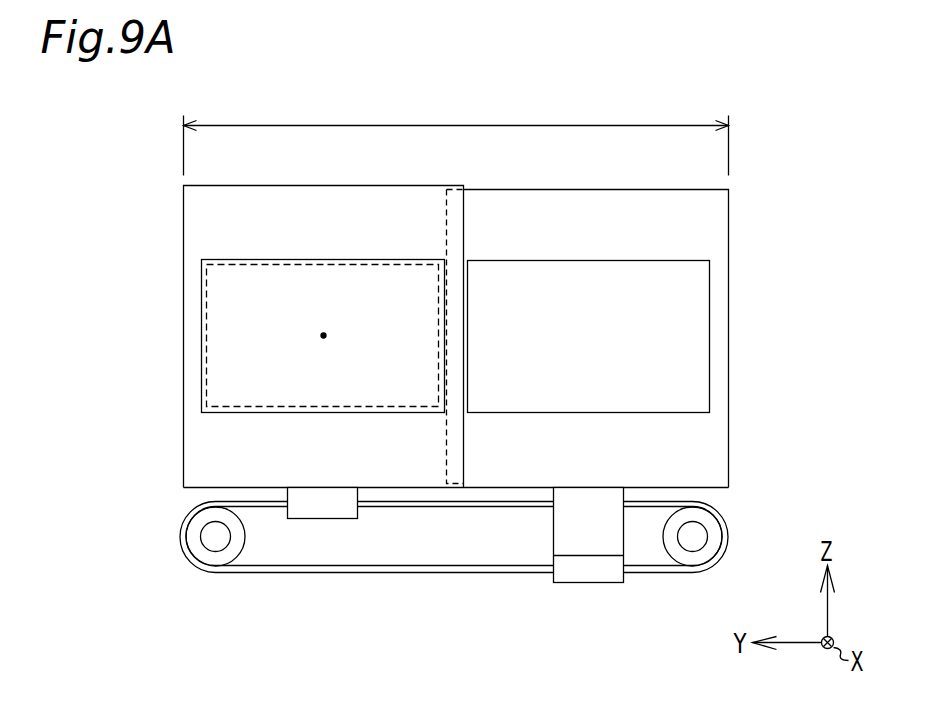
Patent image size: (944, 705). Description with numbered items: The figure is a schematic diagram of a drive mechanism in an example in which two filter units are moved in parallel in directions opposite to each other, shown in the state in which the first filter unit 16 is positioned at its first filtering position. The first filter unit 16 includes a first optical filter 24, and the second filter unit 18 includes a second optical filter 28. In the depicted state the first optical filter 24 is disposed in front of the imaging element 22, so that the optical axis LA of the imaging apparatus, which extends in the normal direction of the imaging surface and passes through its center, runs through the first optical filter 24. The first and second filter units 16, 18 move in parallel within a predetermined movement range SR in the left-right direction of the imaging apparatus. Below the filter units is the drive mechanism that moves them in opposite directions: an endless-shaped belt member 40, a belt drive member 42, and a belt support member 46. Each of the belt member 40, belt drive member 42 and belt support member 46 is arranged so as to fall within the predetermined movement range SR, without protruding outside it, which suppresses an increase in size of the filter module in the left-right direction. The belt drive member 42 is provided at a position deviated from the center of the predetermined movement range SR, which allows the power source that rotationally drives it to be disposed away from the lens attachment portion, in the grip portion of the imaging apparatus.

The first filter unit 16 is at (198, 223).
The second filter unit 18 is at (710, 223).
The imaging element 22 is at (206, 333).
The first optical filter 24 is at (335, 387).
The second optical filter 28 is at (604, 383).
The endless-shaped belt member 40 is at (370, 573).
The belt drive member 42 is at (710, 527).
The belt support member 46 is at (197, 527).
The optical axis LA is at (325, 335).
The predetermined movement range SR is at (456, 137).